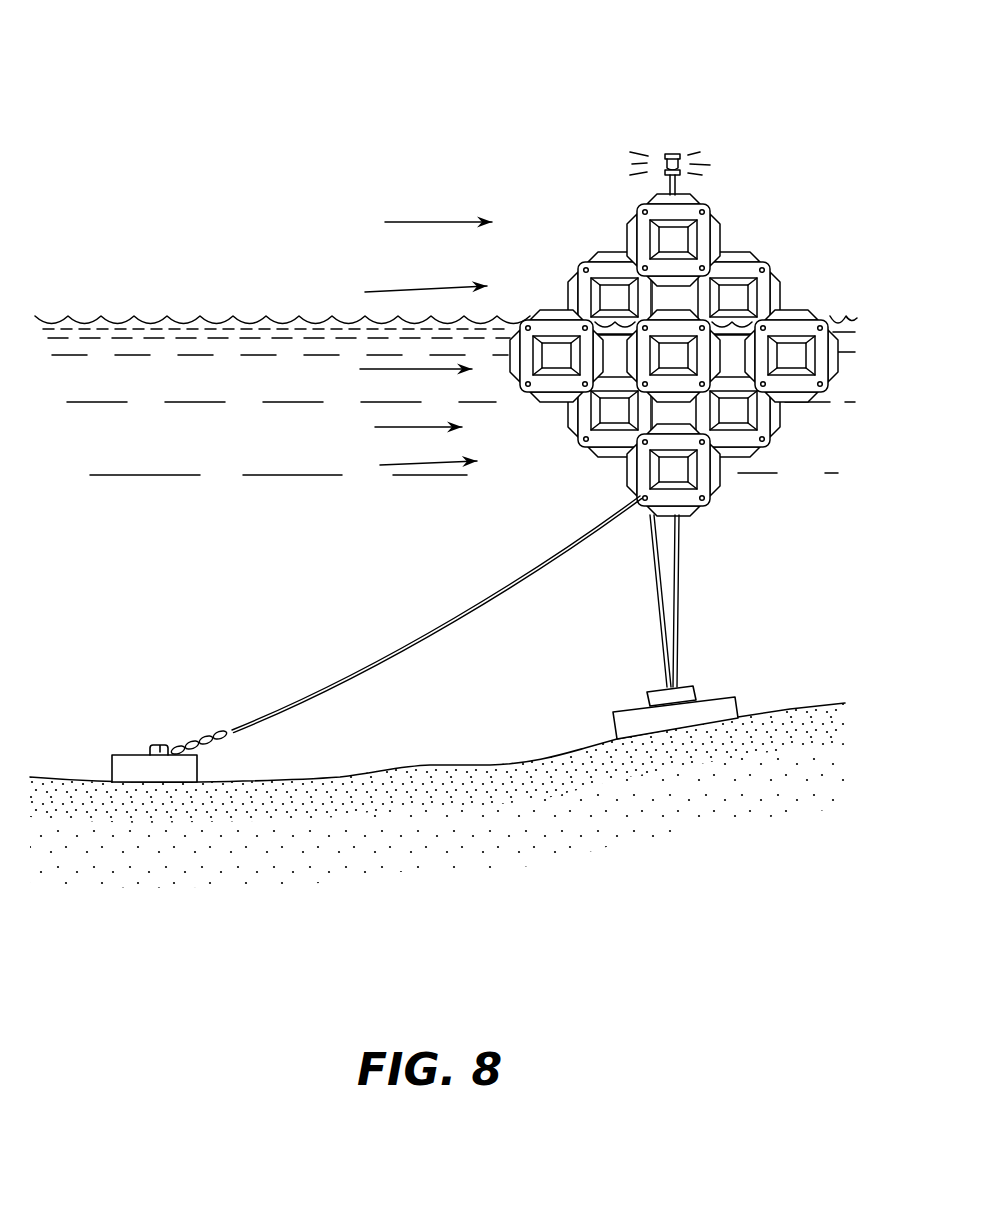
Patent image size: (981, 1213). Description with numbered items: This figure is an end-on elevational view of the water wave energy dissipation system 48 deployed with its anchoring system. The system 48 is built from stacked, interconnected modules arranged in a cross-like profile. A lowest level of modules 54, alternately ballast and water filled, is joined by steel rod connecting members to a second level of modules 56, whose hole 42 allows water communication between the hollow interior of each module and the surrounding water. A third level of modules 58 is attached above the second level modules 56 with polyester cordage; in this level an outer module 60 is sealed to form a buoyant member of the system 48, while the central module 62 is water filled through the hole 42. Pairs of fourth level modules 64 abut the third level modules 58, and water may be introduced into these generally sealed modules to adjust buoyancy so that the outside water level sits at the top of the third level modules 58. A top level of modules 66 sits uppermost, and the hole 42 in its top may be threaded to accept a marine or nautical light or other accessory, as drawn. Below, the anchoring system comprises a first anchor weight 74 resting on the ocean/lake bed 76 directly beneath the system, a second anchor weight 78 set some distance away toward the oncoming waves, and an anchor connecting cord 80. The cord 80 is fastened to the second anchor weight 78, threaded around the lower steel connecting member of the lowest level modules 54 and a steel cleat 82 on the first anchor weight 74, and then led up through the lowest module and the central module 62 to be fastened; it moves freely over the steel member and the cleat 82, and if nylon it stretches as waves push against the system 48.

The water wave energy dissipation system 48 is at (457, 261).
The hole 42 is at (673, 315).
The central module 62 is at (672, 358).
The outer module 60 is at (797, 352).
The top level of modules 66 is at (407, 222).
The fourth level of modules 64 is at (405, 293).
The third level of modules 58 is at (396, 369).
The second level of modules 56 is at (391, 427).
The lowest level of modules 54 is at (408, 469).
The anchor connecting cord 80 is at (674, 585).
The steel cleat 82 is at (694, 689).
The first anchor weight 74 is at (710, 718).
The ocean/lake bed 76 is at (467, 783).
The second anchor weight 78 is at (168, 770).